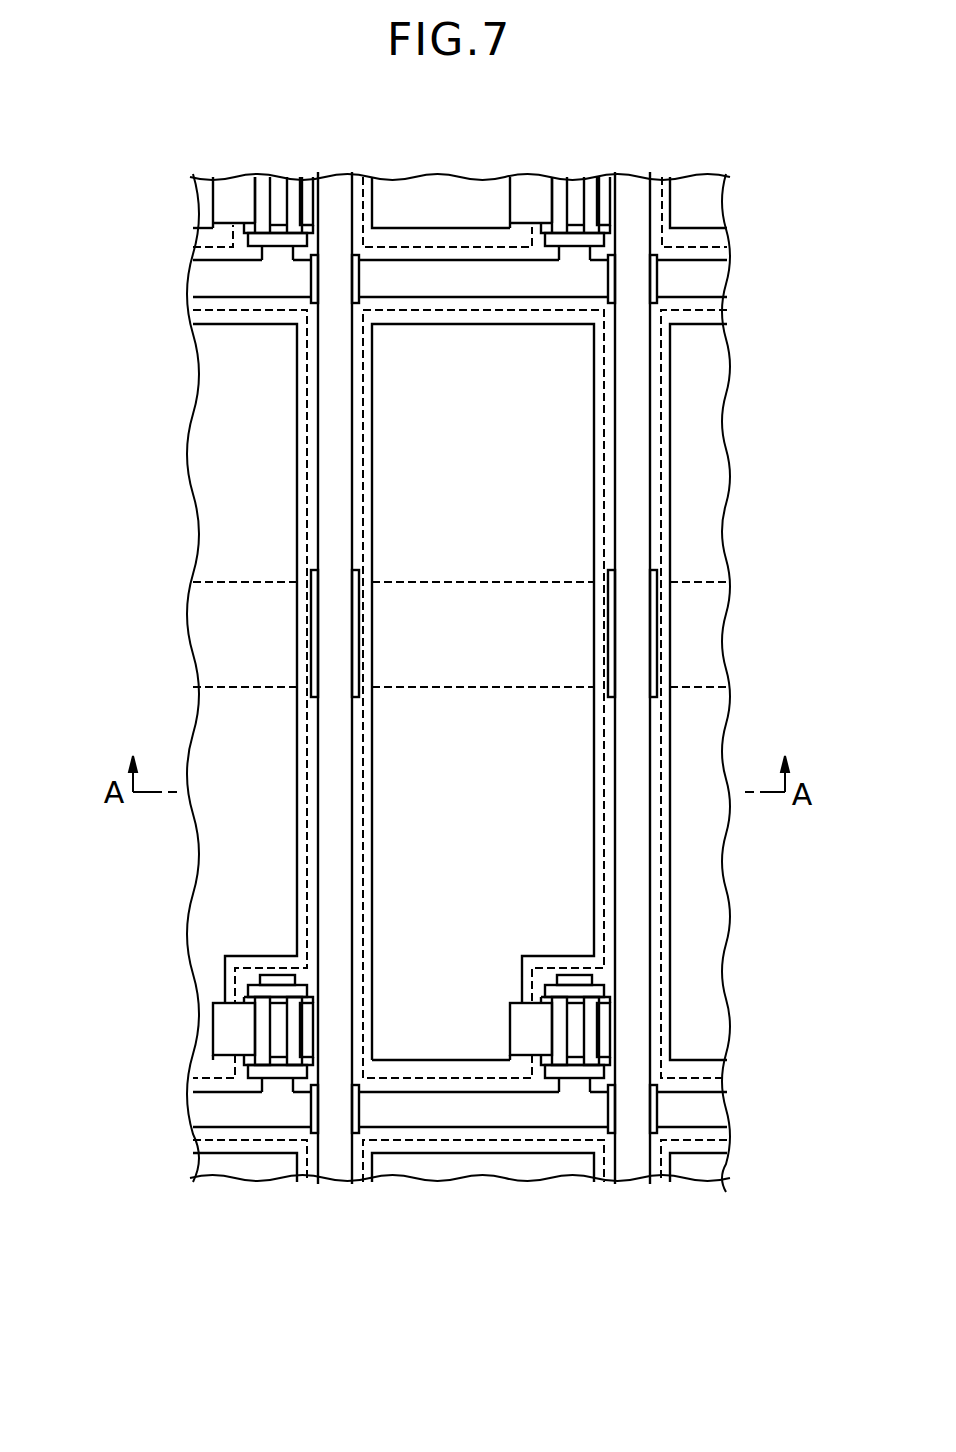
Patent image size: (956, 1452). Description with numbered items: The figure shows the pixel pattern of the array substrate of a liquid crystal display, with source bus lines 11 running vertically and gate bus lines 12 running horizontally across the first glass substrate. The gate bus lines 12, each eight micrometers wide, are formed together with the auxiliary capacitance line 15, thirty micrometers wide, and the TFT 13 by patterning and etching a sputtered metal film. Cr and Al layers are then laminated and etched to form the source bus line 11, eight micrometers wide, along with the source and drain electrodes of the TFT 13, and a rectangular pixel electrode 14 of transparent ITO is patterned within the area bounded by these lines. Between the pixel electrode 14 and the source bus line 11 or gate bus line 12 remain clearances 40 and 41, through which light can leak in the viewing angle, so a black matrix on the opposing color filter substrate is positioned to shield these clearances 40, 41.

The source bus line 11 is at (330, 196).
The gate bus line 12 is at (710, 283).
The TFT 13 is at (592, 1030).
The pixel electrode 14 is at (305, 402).
The auxiliary capacitance line 15 is at (700, 632).
The clearance 40 is at (357, 447).
The clearance 41 is at (405, 315).